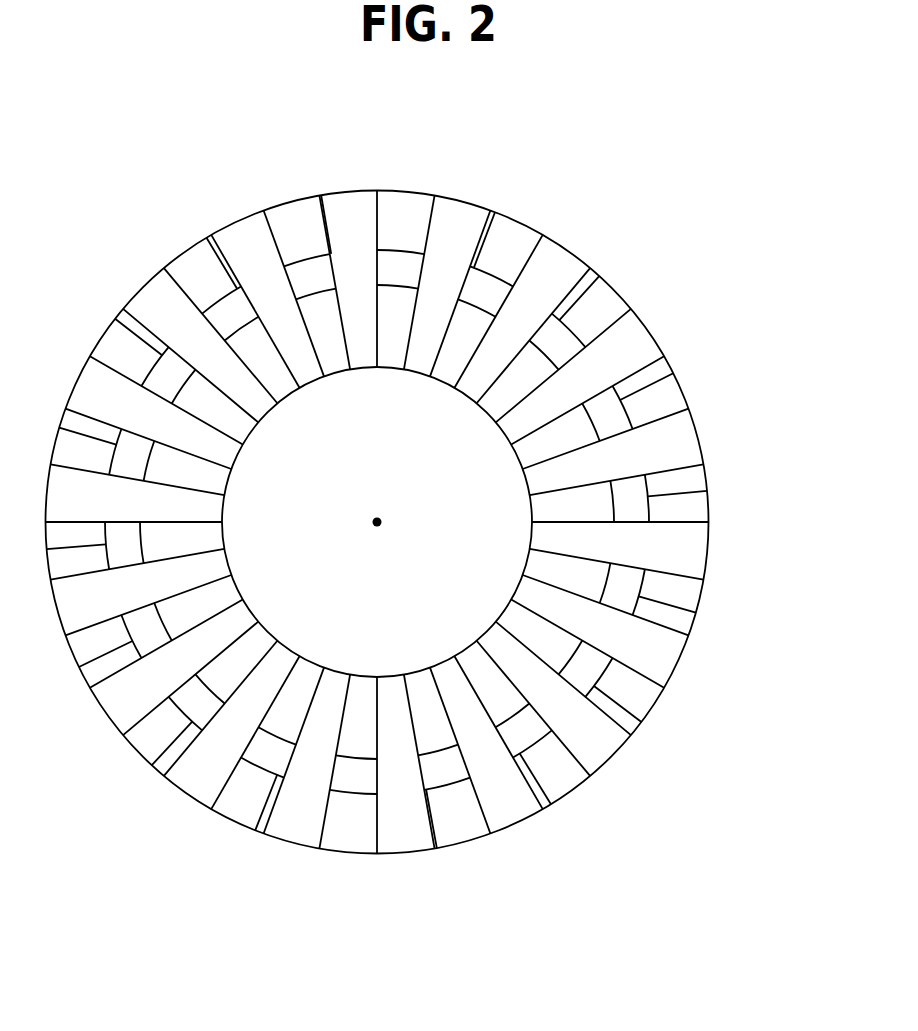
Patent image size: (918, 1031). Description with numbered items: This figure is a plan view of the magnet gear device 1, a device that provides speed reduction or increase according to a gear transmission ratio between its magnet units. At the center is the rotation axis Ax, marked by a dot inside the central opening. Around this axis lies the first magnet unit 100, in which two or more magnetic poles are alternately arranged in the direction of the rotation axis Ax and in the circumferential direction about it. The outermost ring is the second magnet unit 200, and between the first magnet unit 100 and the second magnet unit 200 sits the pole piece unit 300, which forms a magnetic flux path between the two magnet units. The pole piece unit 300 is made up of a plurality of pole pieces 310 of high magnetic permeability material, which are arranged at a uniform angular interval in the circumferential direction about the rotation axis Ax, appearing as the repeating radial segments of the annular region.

The magnet gear device 1 is at (641, 125).
The first magnet unit 100 is at (556, 348).
The second magnet unit 200 is at (712, 487).
The pole piece unit 300 is at (686, 590).
The pole piece 310 is at (697, 557).
The rotation axis Ax is at (377, 520).